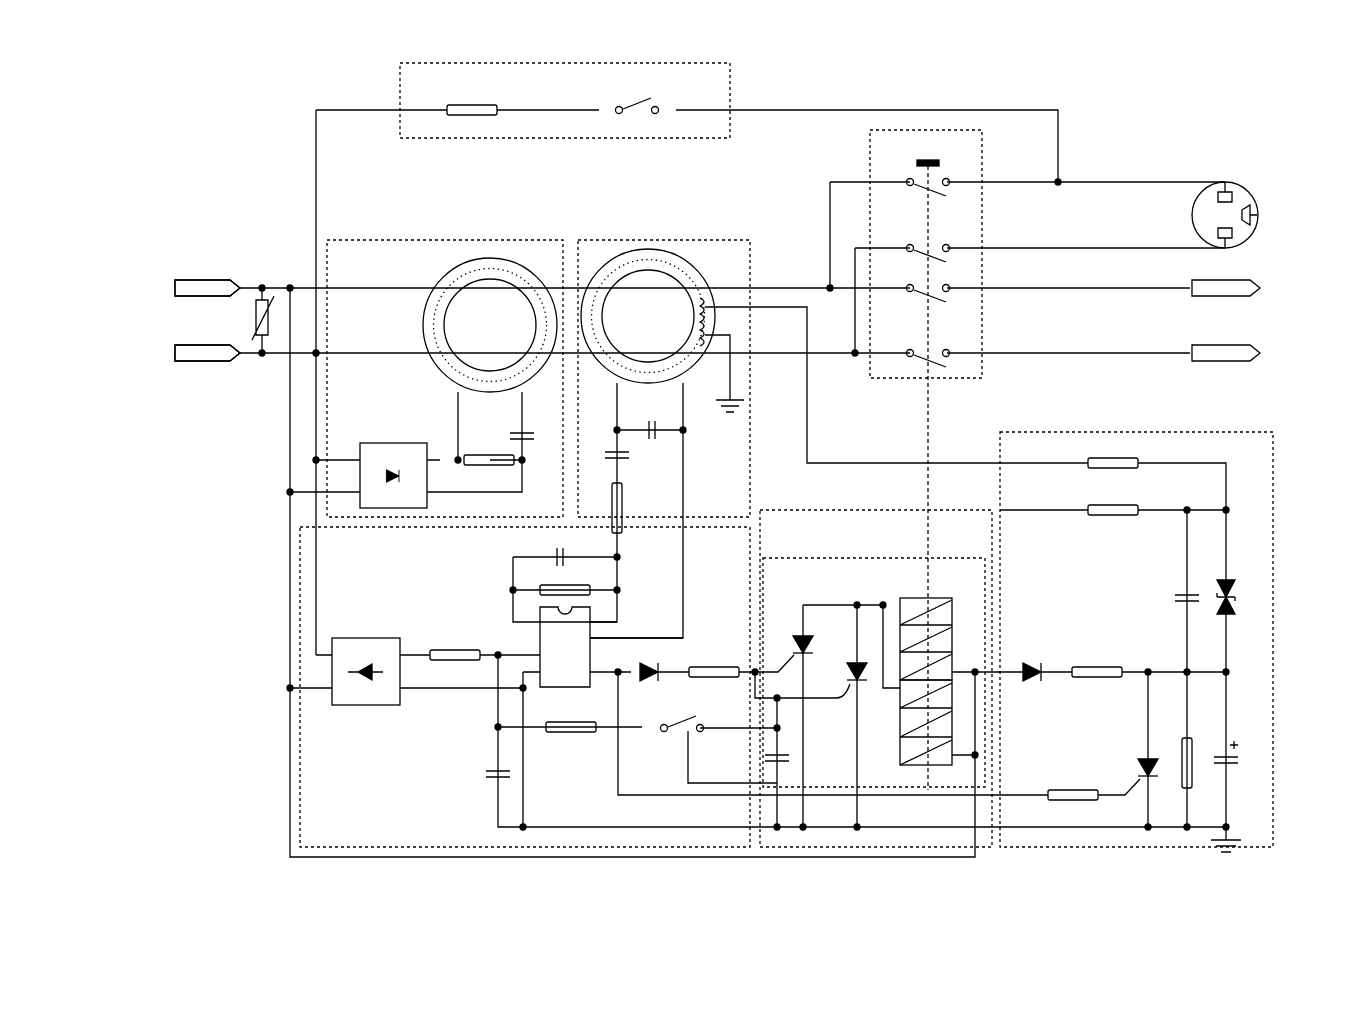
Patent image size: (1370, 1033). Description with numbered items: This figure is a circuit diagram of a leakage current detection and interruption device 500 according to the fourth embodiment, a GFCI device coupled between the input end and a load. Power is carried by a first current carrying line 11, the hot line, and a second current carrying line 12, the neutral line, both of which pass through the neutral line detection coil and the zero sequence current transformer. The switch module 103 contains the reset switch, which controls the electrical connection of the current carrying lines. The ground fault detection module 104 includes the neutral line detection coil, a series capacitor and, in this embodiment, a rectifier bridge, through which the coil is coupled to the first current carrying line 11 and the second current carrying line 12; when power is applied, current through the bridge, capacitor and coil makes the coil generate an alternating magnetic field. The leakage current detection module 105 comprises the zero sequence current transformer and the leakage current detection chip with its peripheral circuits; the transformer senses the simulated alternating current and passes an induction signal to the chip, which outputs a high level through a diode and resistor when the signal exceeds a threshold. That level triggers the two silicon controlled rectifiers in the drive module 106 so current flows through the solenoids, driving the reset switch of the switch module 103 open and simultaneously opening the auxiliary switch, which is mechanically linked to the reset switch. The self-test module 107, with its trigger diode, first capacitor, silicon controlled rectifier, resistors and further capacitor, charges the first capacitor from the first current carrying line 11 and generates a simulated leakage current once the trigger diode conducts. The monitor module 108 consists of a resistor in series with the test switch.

The leakage current detection and interruption device 500 is at (1273, 101).
The first current carrying line 11 is at (240, 285).
The second current carrying line 12 is at (240, 355).
The switch module 103 is at (955, 130).
The ground fault detection module 104 is at (355, 240).
The leakage current detection module 105 is at (640, 848).
The drive module 106 is at (820, 848).
The self-test module 107 is at (1245, 432).
The monitor module 108 is at (658, 63).